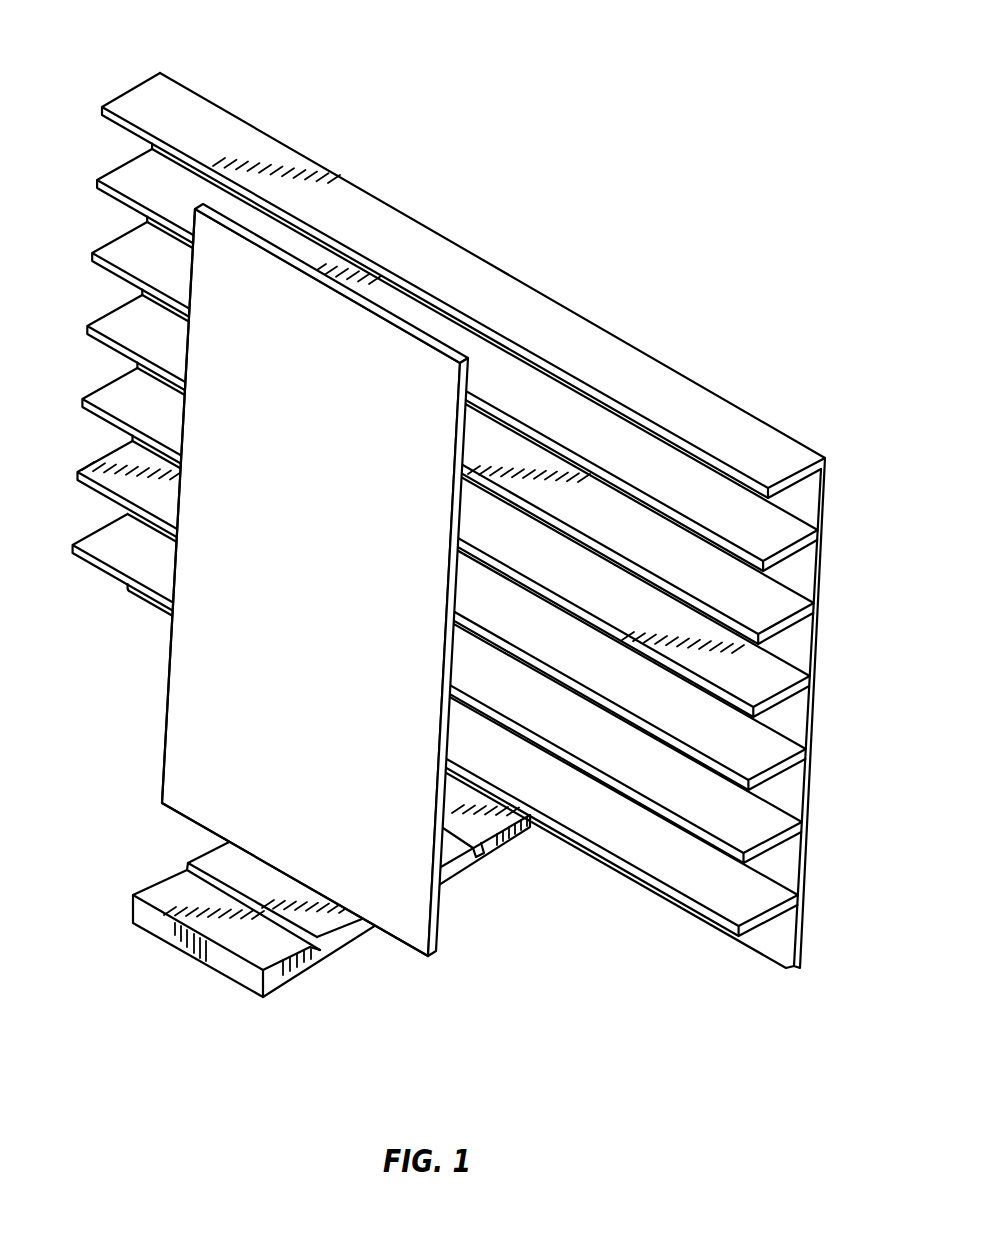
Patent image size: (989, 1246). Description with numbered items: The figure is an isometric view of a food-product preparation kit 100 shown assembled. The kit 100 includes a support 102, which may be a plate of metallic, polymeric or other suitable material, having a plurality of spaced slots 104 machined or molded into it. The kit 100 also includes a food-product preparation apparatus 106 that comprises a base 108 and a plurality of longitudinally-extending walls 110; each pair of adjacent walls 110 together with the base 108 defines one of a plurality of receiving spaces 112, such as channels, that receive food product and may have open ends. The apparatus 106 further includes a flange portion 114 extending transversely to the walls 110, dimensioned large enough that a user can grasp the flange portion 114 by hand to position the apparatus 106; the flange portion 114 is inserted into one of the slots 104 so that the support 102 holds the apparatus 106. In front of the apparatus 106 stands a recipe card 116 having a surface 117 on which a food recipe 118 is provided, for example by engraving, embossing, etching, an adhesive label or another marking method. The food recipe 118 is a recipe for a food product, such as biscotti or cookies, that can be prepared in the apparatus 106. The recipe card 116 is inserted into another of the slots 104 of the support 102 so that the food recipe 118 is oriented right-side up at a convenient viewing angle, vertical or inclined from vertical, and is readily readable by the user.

The food-product preparation kit 100 is at (450, 525).
The support 102 is at (283, 975).
The slots 104 is at (180, 858).
The food-product preparation apparatus 106 is at (704, 370).
The base 108 is at (828, 496).
The longitudinally-extending walls 110 is at (790, 478).
The receiving spaces 112 is at (100, 144).
The flange portion 114 is at (808, 903).
The recipe card 116 is at (240, 580).
The surface 117 is at (178, 800).
The food recipe 118 is at (186, 426).